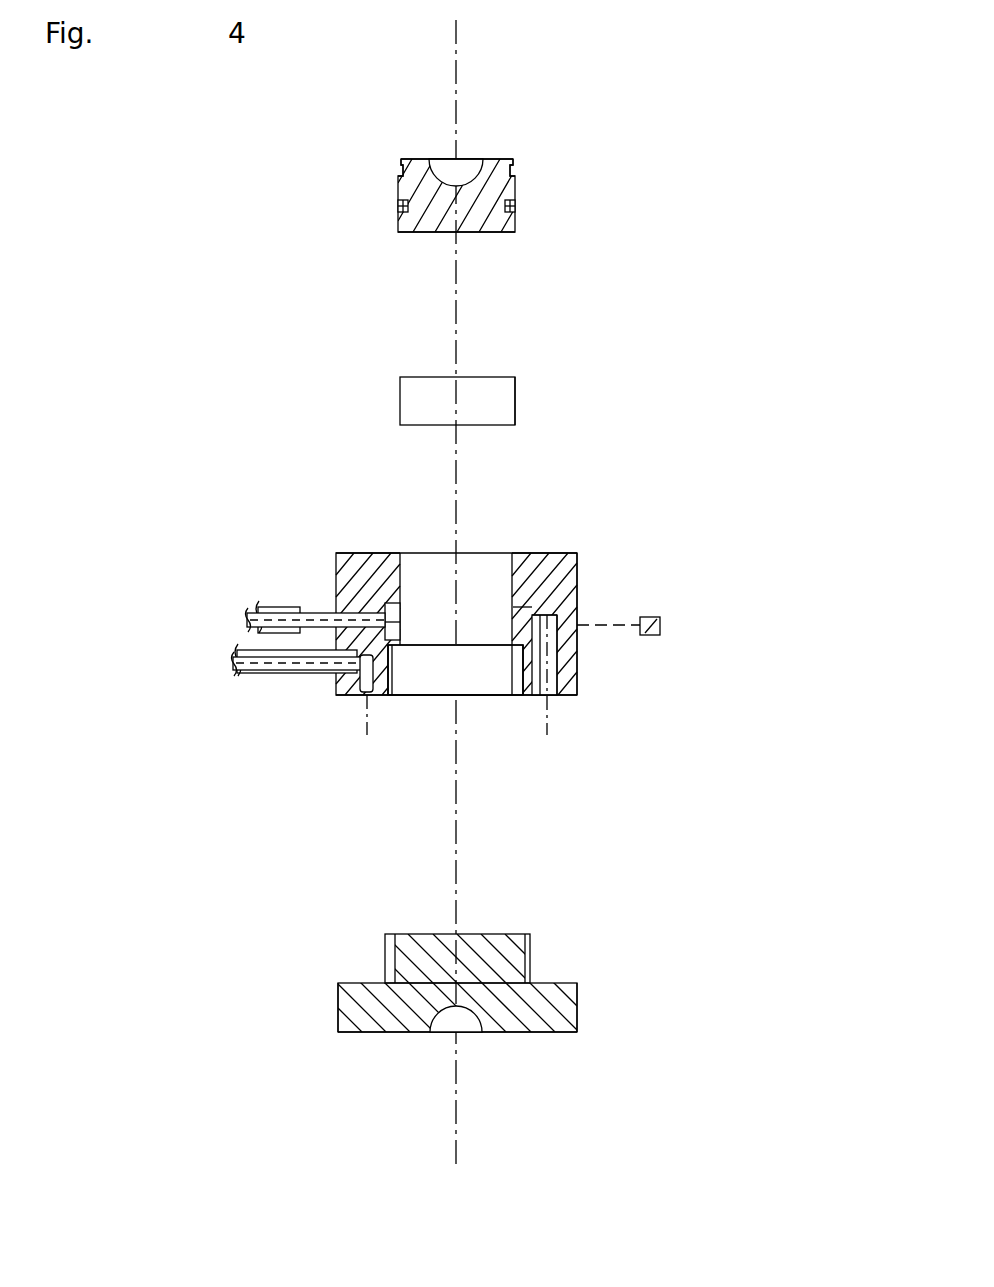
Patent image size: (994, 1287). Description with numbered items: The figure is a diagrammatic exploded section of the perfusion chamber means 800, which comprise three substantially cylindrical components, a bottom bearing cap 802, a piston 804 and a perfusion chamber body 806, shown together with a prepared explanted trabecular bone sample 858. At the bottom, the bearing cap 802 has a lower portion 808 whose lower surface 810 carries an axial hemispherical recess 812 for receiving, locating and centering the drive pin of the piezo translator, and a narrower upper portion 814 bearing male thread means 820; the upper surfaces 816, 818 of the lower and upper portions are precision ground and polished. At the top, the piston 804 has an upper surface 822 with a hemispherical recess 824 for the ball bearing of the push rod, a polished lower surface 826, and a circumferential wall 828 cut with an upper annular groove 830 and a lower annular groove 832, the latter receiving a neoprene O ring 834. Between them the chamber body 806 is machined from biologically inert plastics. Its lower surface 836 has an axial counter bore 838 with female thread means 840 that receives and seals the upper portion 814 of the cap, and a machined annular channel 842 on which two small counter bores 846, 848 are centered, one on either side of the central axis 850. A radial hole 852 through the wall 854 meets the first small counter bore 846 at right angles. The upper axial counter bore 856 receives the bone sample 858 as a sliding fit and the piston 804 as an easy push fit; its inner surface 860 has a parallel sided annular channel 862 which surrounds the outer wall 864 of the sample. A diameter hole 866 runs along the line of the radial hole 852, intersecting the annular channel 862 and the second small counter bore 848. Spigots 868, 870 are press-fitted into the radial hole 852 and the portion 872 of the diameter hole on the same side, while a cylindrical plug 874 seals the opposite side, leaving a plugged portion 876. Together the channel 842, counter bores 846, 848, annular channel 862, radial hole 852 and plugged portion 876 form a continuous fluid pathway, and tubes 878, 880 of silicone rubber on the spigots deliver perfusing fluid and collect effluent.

The perfusion chamber means 800 is at (390, 106).
The bottom bearing cap 802 is at (580, 1010).
The piston 804 is at (512, 162).
The perfusion chamber body 806 is at (565, 595).
The lower portion 808 is at (350, 1014).
The lower surface 810 is at (368, 1033).
The hemispherical recess 812 is at (463, 1027).
The upper portion 814 is at (402, 965).
The upper surface 816 is at (548, 985).
The upper surface 818 is at (440, 934).
The male thread means 820 is at (530, 955).
The upper surface 822 is at (483, 163).
The hemispherical recess 824 is at (455, 167).
The lower surface 826 is at (420, 233).
The circumferential wall 828 is at (398, 193).
The upper annular groove 830 is at (400, 171).
The lower annular groove 832 is at (515, 200).
The O ring 834 is at (513, 210).
The lower surface 836 is at (573, 688).
The axial counter bore 838 is at (573, 683).
The female thread means 840 is at (510, 667).
The annular channel 842 is at (352, 690).
The small counter bore 846 is at (347, 688).
The second small counter bore 848 is at (550, 655).
The central axis 850 is at (350, 587).
The radial hole 852 is at (360, 680).
The wall 854 is at (560, 578).
The upper axial counter bore 856 is at (400, 562).
The explanted trabecular bone sample 858 is at (495, 405).
The inner surface 860 is at (345, 610).
The annular channel 862 is at (525, 605).
The outer margin or wall 864 is at (515, 411).
The diameter hole 866 is at (565, 608).
The spigot 868 is at (293, 612).
The spigot 870 is at (333, 673).
The portion of diameter hole 872 is at (388, 612).
The cylindrical plug 874 is at (560, 620).
The plugged portion 876 is at (660, 620).
The tube 878 is at (247, 632).
The tube 880 is at (272, 677).